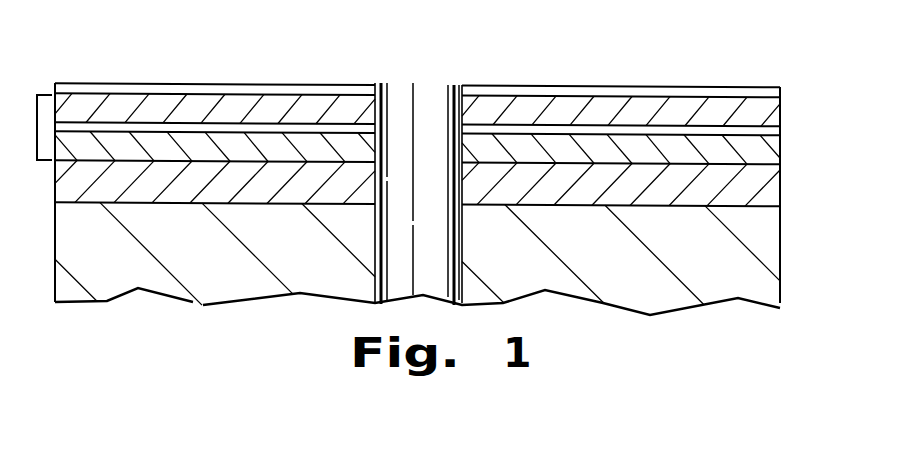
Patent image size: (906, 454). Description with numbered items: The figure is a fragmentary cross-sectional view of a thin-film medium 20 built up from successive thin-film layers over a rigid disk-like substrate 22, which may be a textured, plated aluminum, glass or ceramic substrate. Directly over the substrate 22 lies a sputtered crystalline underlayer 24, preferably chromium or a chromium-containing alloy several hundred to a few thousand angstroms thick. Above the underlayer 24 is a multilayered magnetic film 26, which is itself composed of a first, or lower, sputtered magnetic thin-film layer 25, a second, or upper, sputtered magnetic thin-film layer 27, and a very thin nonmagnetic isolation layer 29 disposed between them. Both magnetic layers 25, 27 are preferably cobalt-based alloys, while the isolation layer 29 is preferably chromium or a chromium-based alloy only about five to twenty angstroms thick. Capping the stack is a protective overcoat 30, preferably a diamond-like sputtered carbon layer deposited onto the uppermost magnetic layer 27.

The thin-film medium 20 is at (705, 53).
The substrate 22 is at (623, 271).
The crystalline underlayer 24 is at (417, 183).
The first magnetic thin-film layer 25 is at (765, 153).
The multilayered magnetic film 26 is at (42, 95).
The second magnetic thin-film layer 27 is at (763, 112).
The nonmagnetic isolation layer 29 is at (770, 130).
The protective overcoat 30 is at (545, 91).